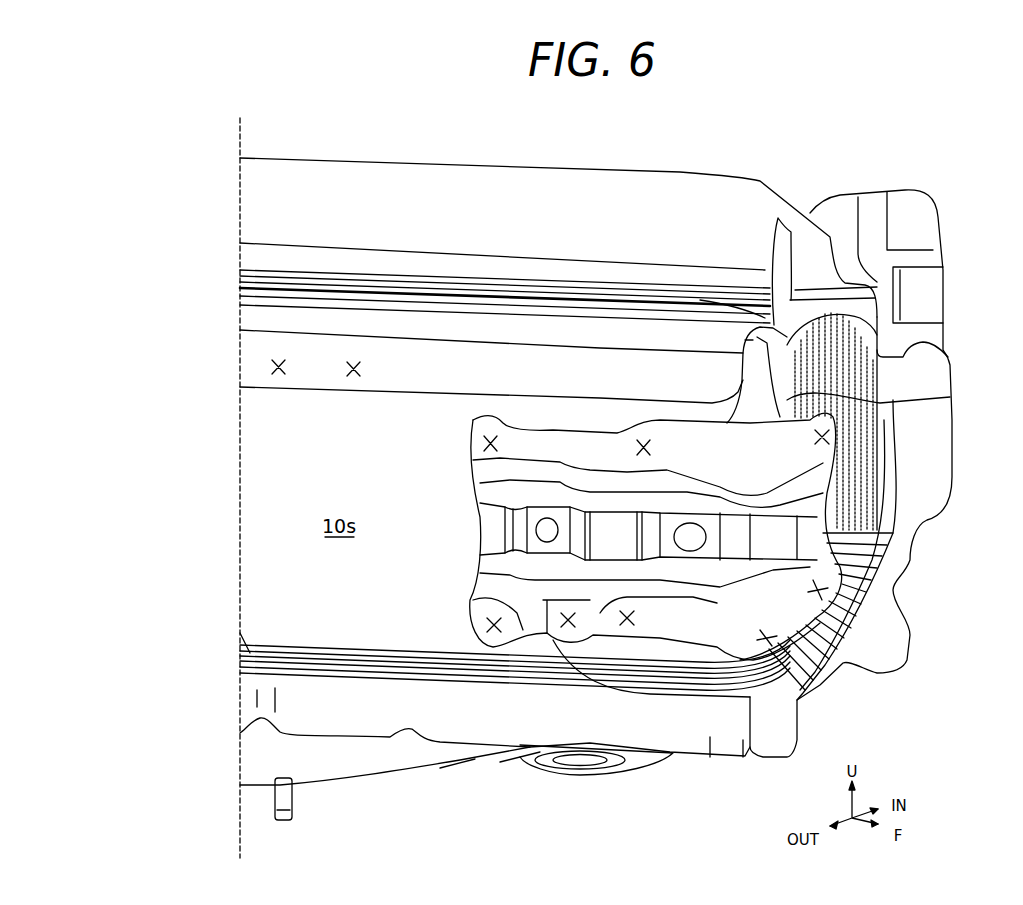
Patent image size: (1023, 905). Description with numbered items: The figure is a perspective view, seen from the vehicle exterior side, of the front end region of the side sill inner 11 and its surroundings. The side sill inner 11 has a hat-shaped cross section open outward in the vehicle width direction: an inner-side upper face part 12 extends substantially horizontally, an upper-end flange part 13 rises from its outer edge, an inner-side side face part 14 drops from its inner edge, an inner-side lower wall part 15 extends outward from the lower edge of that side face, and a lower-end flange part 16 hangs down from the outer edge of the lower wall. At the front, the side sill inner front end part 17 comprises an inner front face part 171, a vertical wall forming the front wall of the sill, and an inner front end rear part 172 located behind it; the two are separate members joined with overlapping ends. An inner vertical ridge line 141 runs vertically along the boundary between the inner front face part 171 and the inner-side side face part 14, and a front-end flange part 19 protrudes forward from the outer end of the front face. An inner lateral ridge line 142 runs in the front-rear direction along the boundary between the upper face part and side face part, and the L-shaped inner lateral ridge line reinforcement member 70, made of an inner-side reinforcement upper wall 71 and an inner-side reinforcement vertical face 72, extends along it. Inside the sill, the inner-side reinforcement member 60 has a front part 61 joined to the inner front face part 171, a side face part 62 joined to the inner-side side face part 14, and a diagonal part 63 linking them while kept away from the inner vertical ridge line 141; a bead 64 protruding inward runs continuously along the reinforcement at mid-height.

The side sill inner 11 is at (628, 146).
The upper-end flange part 13 is at (385, 175).
The side sill inner front end part 17 is at (563, 166).
The inner lateral ridge line 142 is at (778, 218).
The inner-side reinforcement upper wall 71 is at (303, 293).
The inner-side upper face part 12 is at (257, 276).
The inner-side reinforcement vertical face 72 is at (252, 360).
The inner lateral ridge line reinforcement member 70 is at (277, 392).
The inner-side side face part 14 is at (267, 483).
The inner front end rear part 172 is at (262, 537).
The diagonal part 63 is at (750, 397).
The inner-side reinforcement member 60 is at (470, 593).
The inner-side reinforcement member side face part 62 is at (470, 450).
The bead 64 is at (480, 522).
The inner front face part 171 is at (812, 340).
The inner-side reinforcement member front part 61 is at (838, 436).
The front-end flange part 19 is at (933, 363).
The inner vertical ridge line 141 is at (947, 397).
The inner-side lower wall part 15 is at (245, 640).
The lower-end flange part 16 is at (255, 690).